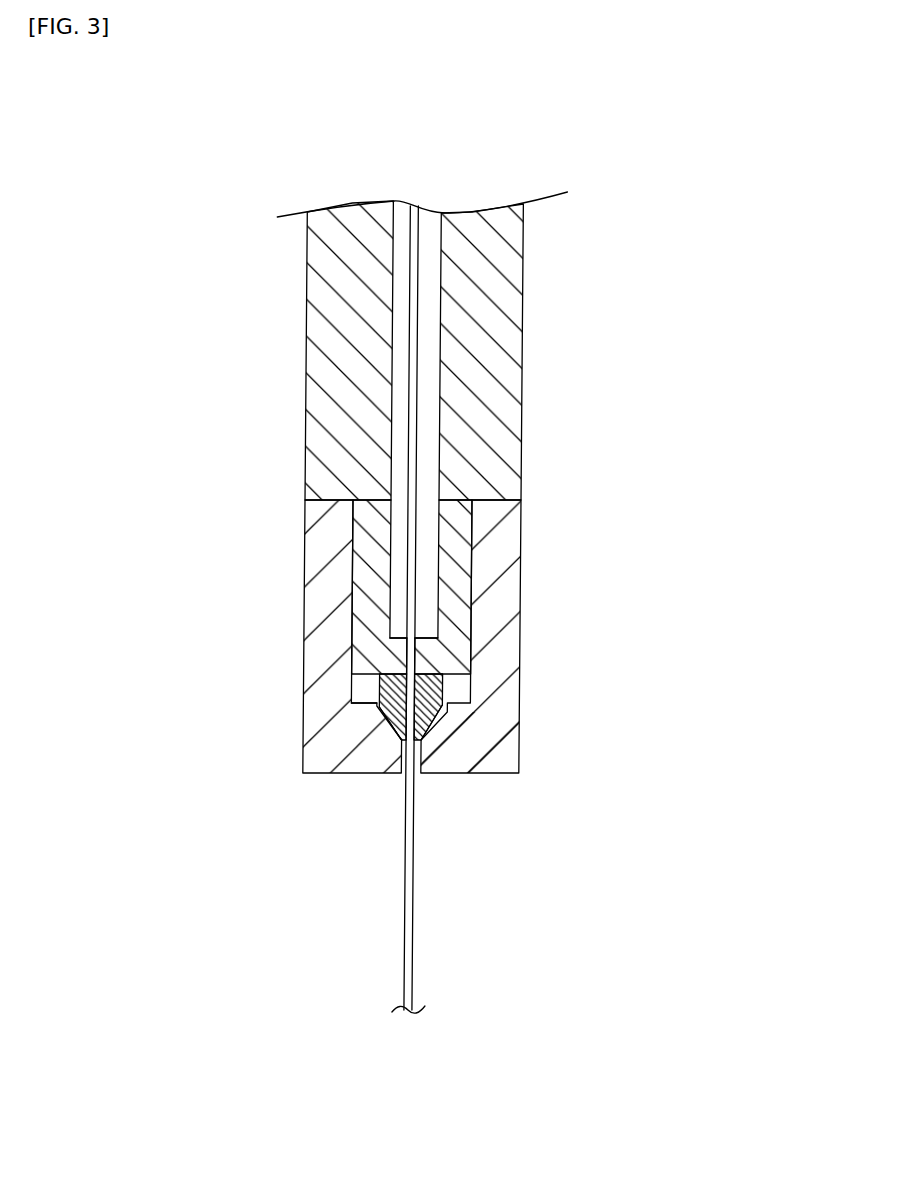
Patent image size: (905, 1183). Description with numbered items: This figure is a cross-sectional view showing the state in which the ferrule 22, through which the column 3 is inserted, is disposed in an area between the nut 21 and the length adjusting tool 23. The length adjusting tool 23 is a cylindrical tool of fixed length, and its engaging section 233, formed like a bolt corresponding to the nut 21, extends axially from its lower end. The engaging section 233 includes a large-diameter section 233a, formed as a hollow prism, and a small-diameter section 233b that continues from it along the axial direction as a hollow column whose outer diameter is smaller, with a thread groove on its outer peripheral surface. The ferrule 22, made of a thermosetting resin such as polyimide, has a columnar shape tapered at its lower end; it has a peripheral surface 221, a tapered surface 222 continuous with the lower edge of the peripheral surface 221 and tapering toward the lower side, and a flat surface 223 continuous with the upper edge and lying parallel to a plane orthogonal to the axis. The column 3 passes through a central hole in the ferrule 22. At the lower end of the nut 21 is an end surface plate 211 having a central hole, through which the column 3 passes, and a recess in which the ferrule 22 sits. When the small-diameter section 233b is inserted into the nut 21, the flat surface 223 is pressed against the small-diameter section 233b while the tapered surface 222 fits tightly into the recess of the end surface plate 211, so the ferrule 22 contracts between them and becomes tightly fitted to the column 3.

The column 3 is at (408, 919).
The nut 21 is at (522, 697).
The end surface plate 211 is at (442, 740).
The ferrule 22 is at (283, 757).
The peripheral surface 221 is at (379, 695).
The tapered surface 222 is at (392, 723).
The flat surface 223 is at (388, 668).
The length adjusting tool 23 is at (441, 437).
The engaging section 233 is at (536, 437).
The large-diameter section 233a is at (497, 358).
The small-diameter section 233b is at (455, 557).